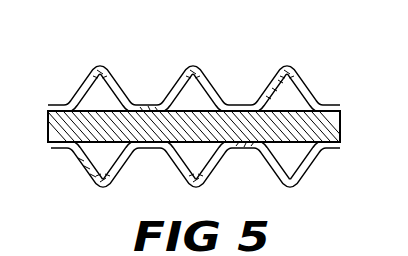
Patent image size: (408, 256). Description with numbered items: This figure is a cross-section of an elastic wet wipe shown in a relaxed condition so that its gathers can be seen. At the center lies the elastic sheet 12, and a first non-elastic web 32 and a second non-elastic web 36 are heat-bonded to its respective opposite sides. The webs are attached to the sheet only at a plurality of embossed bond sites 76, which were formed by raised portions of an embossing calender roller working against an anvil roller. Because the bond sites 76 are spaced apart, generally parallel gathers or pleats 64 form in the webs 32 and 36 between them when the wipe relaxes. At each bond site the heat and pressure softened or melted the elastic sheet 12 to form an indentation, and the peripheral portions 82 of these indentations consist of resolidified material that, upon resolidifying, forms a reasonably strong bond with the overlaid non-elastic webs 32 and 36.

The elastic sheet 12 is at (338, 125).
The first non-elastic web 32 is at (318, 100).
The second non-elastic web 36 is at (318, 149).
The gathers or pleats 64 is at (279, 63).
The bond sites 76 is at (159, 86).
The peripheral portions 82 is at (251, 110).